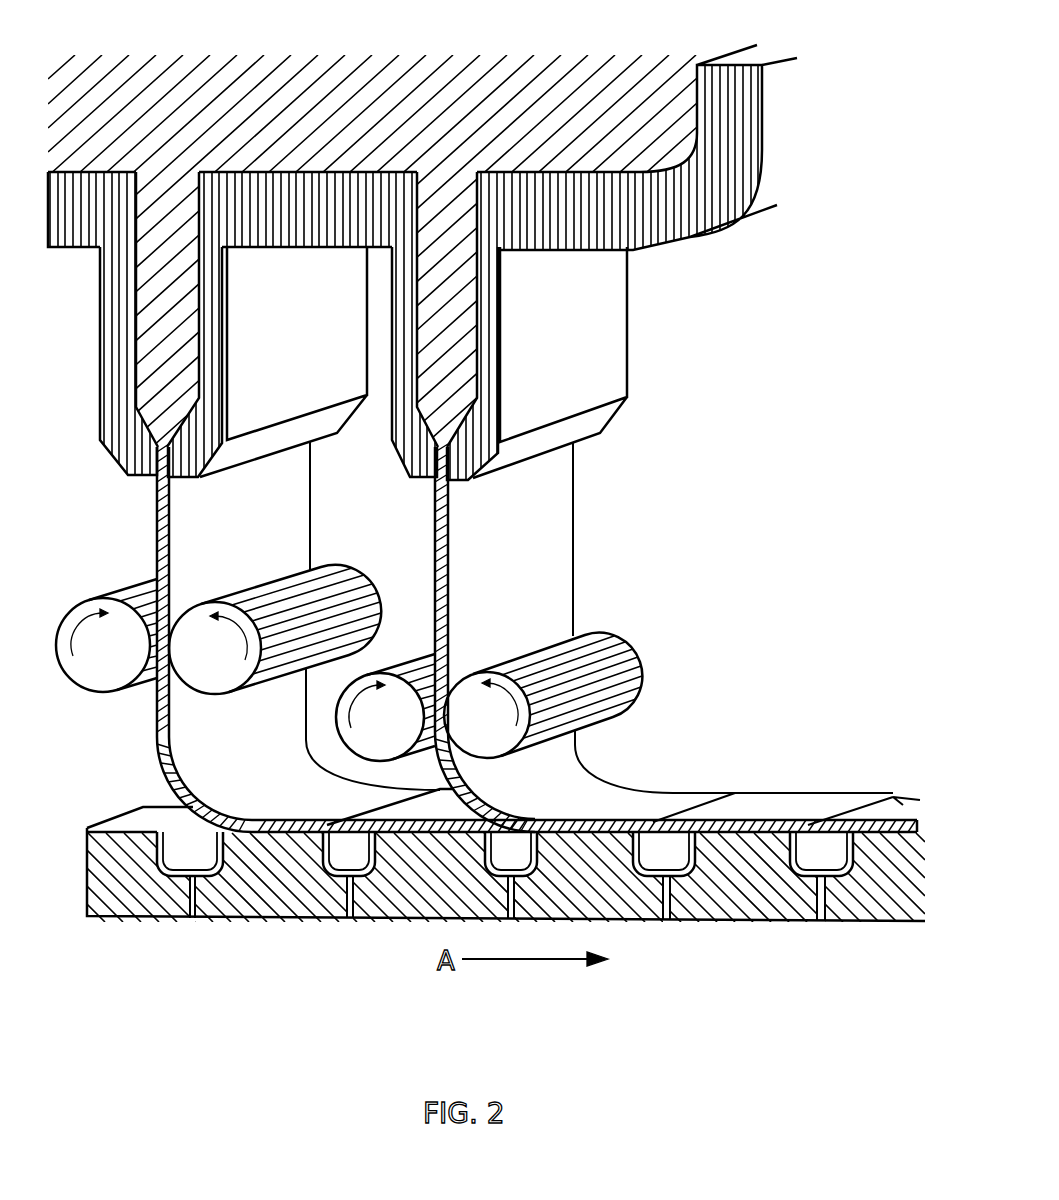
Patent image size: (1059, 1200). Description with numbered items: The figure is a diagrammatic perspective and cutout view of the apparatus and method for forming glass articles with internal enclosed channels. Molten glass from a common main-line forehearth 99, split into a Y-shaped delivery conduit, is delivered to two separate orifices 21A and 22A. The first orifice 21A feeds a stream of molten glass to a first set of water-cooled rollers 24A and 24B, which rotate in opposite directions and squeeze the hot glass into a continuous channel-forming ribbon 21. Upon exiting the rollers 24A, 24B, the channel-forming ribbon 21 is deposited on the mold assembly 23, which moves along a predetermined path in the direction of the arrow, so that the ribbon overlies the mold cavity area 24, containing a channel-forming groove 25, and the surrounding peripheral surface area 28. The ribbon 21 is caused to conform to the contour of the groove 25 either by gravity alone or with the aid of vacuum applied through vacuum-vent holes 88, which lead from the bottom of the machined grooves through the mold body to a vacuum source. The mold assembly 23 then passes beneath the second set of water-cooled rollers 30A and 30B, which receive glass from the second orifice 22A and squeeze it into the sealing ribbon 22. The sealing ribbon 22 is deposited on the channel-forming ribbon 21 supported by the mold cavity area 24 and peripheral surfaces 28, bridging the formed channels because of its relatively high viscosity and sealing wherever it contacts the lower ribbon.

The main-line forehearth 99 is at (422, 241).
The first orifice 21A is at (128, 473).
The second orifice 22A is at (463, 462).
The channel-forming ribbon of molten glass 21 is at (285, 497).
The sealing ribbon of molten glass 22 is at (557, 582).
The water-cooled roller 24A is at (130, 587).
The water-cooled roller 24B is at (313, 583).
The water-cooled roller 30A is at (400, 660).
The water-cooled roller 30B is at (637, 660).
The mold cavity area 24 is at (145, 822).
The peripheral surface area 28 is at (760, 823).
The mold assembly 23 is at (303, 917).
The channel-forming groove 25 is at (352, 874).
The vacuum-vent holes 88 is at (822, 918).